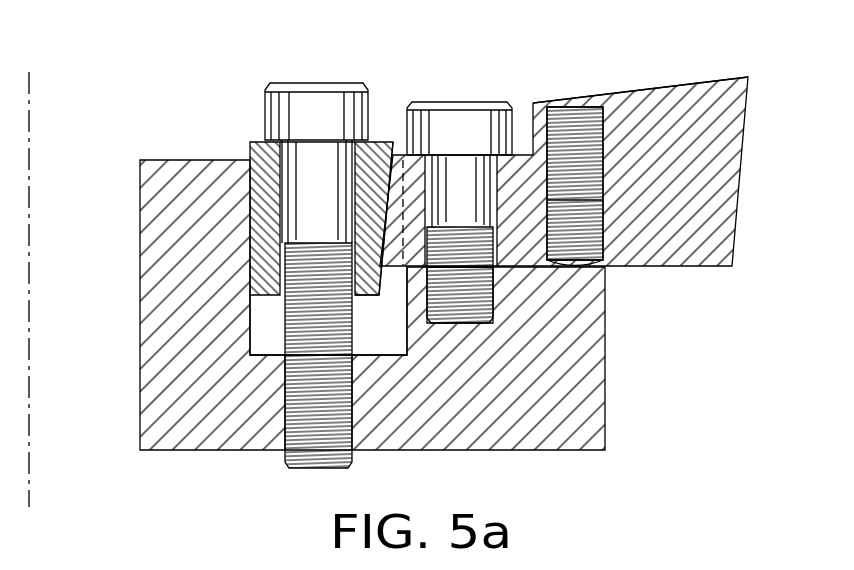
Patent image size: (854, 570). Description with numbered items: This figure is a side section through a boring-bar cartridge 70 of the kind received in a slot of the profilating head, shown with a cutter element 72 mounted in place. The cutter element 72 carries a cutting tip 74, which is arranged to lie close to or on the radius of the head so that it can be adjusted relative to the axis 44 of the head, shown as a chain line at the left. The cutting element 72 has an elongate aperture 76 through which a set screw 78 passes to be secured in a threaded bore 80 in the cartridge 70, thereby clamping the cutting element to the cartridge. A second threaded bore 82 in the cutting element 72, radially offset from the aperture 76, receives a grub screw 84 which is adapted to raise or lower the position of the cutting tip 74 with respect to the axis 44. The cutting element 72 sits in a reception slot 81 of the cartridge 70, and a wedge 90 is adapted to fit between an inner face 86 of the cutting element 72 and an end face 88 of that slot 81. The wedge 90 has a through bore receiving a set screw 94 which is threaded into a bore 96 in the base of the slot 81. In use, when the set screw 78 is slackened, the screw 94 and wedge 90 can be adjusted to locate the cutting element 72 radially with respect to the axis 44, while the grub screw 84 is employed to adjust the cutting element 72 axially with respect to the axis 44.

The axis 44 is at (30, 100).
The boring-bar cartridge 70 is at (152, 391).
The cutter element 72 is at (737, 157).
The cutting tip 74 is at (749, 78).
The elongate aperture 76 is at (492, 194).
The set screw 78 is at (450, 127).
The threaded bore 80 is at (493, 290).
The reception slot 81 is at (265, 323).
The threaded bore 82 is at (605, 138).
The grub screw 84 is at (583, 215).
The inner face 86 is at (384, 199).
The end face 88 is at (257, 177).
The wedge 90 is at (369, 281).
The set screw 94 is at (298, 107).
The bore 96 is at (285, 414).